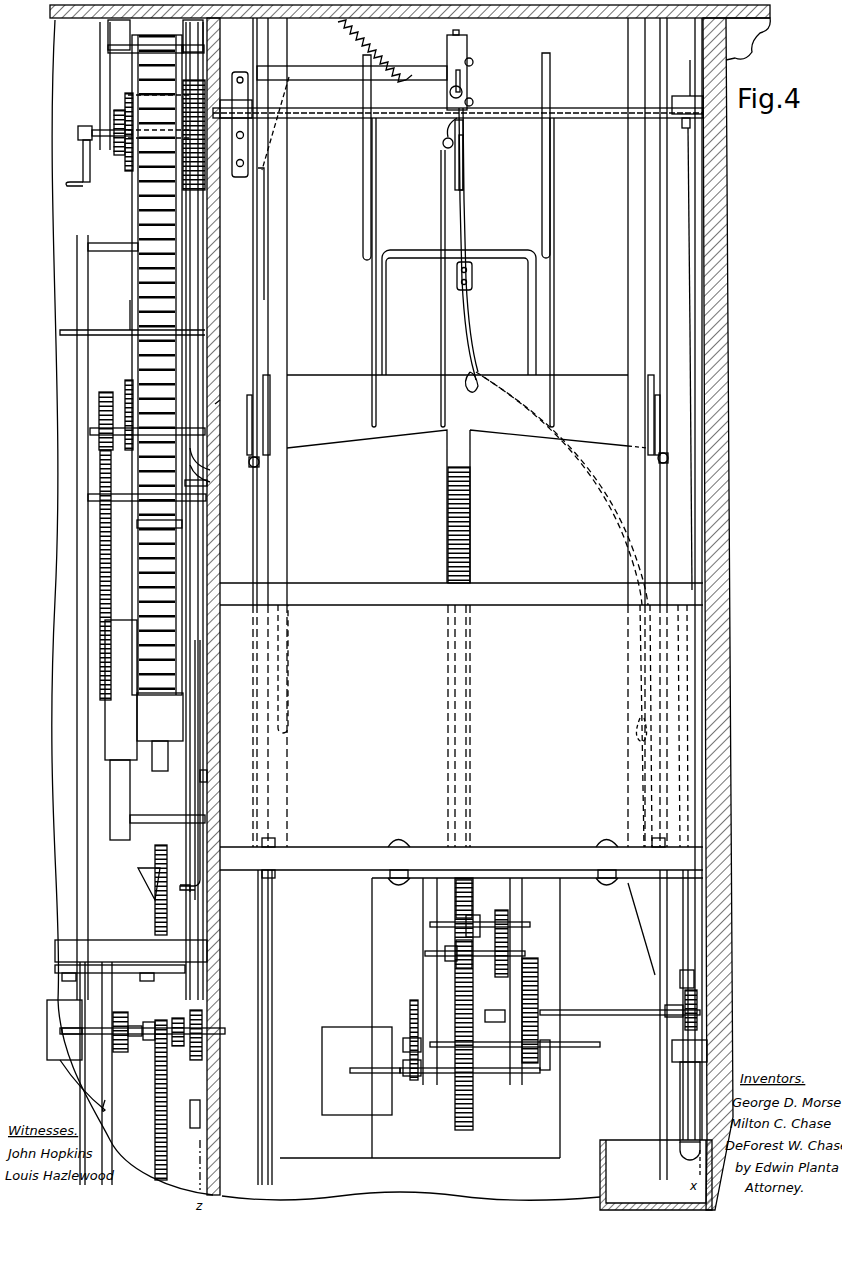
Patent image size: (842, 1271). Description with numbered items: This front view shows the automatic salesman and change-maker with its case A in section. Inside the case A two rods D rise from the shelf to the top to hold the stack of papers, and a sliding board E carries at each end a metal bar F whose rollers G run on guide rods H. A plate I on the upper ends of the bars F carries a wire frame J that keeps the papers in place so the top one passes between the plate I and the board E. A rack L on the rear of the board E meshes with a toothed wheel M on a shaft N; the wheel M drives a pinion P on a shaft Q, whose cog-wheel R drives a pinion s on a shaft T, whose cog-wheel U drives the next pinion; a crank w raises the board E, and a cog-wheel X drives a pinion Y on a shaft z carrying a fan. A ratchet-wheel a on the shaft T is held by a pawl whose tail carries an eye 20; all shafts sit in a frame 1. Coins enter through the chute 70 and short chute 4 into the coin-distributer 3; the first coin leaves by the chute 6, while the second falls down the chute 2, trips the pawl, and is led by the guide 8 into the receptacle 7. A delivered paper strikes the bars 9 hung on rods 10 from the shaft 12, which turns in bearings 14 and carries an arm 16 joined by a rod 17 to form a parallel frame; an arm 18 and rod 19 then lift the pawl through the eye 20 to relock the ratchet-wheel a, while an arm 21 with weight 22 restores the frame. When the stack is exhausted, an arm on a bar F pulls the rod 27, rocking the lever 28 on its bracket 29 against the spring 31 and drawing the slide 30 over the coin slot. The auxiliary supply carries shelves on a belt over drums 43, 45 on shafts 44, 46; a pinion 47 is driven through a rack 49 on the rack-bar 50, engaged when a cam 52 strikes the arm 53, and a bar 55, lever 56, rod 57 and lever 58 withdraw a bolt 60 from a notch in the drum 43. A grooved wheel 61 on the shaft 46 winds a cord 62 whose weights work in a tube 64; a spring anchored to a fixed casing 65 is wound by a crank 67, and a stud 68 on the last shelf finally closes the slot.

The frame 1 is at (522, 893).
The chute 2 is at (582, 456).
The coin-distributer 3 is at (466, 312).
The short chute 4 is at (465, 175).
The chute 6 is at (744, 925).
The box or receptacle 7 is at (656, 1175).
The guide 8 is at (685, 1150).
The bars 9 is at (370, 300).
The rods 10 is at (372, 200).
The upper shaft 12 is at (512, 108).
The bearing 14 is at (232, 90).
The arm 16 is at (443, 140).
The rod 17 is at (441, 308).
The arm 18 is at (686, 134).
The rod 19 is at (693, 356).
The eye 20 is at (696, 982).
The arm 21 is at (462, 80).
The weight 22 is at (450, 93).
The rod 27 is at (262, 314).
The lever 28 is at (322, 76).
The bracket 29 is at (236, 140).
The slide 30 is at (467, 42).
The spring 31 is at (392, 62).
The lower drum 43 is at (130, 395).
The lower shaft 44 is at (96, 437).
The upper drum 45 is at (127, 103).
The shaft 46 is at (78, 133).
The pinion 47 is at (98, 418).
The rack 49 is at (100, 552).
The rack-bar 50 is at (100, 1098).
The cam 52 is at (158, 885).
The arm 53 is at (152, 1040).
The bar 55 is at (182, 884).
The lever 56 is at (207, 774).
The rod 57 is at (200, 718).
The lever 58 is at (212, 484).
The bolt 60 is at (214, 455).
The grooved wheel 61 is at (117, 153).
The cord 62 is at (130, 312).
The tube 64 is at (135, 682).
The fixed casing 65 is at (198, 168).
The crank 67 is at (83, 153).
The stud 68 is at (216, 405).
The chute 70 is at (194, 1118).
The case A is at (726, 362).
The rods or bars D is at (287, 298).
The sliding board E is at (467, 506).
The metal bar F is at (262, 418).
The rollers or wheels G is at (248, 462).
The guide rods or bars H is at (207, 300).
The plate I is at (452, 402).
The wire frame J is at (392, 250).
The rack L is at (464, 535).
The toothed wheel M is at (455, 900).
The shaft N is at (452, 924).
The pinion P is at (453, 964).
The shaft Q is at (443, 953).
The cog-wheel R is at (508, 946).
The shaft T is at (597, 1010).
The cog-wheel U is at (538, 980).
The cog-wheel X is at (410, 1012).
The pinion Y is at (410, 1080).
The ratchet-wheel a is at (697, 1025).
The pinion s is at (494, 1028).
The crank w is at (600, 1074).
The shaft z is at (486, 1080).